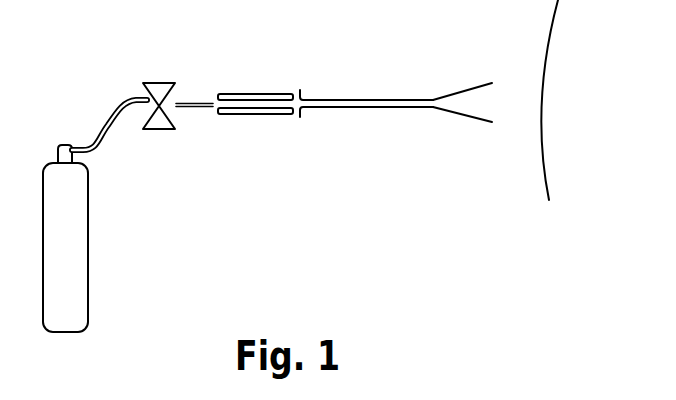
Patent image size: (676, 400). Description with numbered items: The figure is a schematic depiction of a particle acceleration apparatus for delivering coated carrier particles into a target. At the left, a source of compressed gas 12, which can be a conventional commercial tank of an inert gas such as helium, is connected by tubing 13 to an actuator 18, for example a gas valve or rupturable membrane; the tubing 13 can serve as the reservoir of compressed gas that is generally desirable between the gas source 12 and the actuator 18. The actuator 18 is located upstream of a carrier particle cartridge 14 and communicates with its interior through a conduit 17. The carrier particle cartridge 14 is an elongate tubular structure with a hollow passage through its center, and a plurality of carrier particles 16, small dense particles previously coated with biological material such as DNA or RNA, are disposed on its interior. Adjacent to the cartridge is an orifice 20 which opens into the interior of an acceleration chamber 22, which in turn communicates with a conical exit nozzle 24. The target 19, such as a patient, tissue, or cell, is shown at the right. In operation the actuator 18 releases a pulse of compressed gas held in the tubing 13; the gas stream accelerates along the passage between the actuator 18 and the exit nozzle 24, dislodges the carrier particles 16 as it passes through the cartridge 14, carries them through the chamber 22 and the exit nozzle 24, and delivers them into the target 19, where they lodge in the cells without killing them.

The source of compressed gas 12 is at (72, 205).
The tubing 13 is at (100, 120).
The carrier particle cartridge 14 is at (253, 92).
The carrier particles 16 is at (268, 117).
The conduit 17 is at (207, 102).
The actuator 18 is at (158, 87).
The target 19 is at (543, 122).
The orifice 20 is at (304, 97).
The acceleration chamber 22 is at (393, 106).
The conical exit nozzle 24 is at (467, 88).